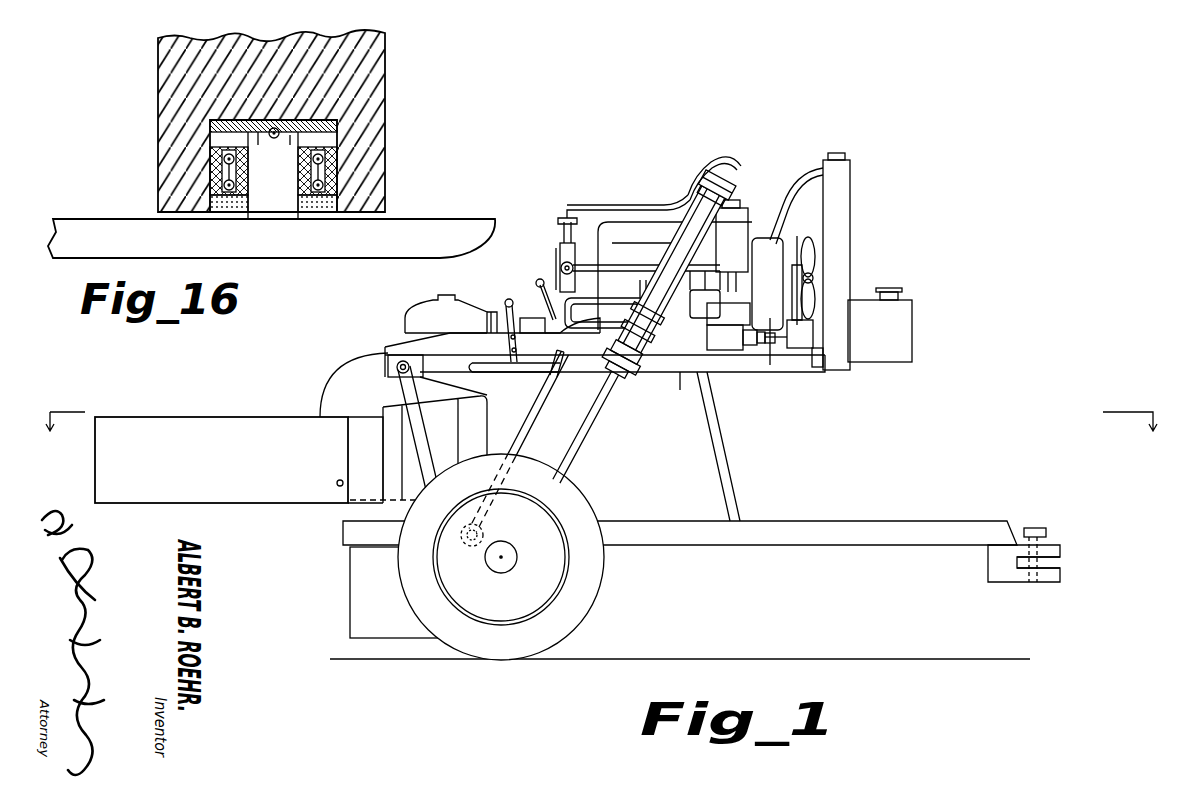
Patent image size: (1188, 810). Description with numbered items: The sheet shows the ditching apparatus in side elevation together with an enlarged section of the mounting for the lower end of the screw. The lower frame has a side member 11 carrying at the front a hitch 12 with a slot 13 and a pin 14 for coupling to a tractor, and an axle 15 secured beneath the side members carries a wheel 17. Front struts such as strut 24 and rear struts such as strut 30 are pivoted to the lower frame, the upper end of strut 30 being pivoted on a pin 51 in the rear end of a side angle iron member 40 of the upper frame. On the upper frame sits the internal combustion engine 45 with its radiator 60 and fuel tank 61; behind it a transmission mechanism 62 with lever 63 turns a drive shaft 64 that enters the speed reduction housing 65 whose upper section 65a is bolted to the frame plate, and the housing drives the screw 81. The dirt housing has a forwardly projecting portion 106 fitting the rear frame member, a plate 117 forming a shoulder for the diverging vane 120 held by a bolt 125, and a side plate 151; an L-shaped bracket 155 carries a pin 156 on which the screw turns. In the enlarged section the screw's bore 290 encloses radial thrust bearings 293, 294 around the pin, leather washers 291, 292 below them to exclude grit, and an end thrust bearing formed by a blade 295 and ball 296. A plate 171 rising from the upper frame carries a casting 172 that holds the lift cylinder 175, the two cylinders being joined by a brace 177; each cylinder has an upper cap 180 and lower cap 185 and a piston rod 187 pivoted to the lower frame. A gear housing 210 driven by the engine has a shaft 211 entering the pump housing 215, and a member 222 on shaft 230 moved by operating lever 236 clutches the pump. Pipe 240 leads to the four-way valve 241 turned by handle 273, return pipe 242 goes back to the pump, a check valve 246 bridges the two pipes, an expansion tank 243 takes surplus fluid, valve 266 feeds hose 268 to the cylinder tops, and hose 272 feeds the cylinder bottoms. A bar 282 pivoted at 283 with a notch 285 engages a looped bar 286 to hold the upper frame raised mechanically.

In FIG. 1, the side member 11 is at (700, 542).
In FIG. 1, the hitch 12 is at (1050, 602).
In FIG. 1, the slot 13 is at (1062, 563).
In FIG. 1, the pin 14 is at (1038, 528).
In FIG. 1, the axle 15 is at (598, 442).
In FIG. 1, the wheel 17 is at (590, 598).
In FIG. 1, the strut 24 is at (733, 474).
In FIG. 1, the strut 30 is at (423, 462).
In FIG. 1, the side angle iron member 40 is at (725, 378).
In FIG. 1, the internal combustion engine 45 is at (675, 276).
In FIG. 1, the pin 51 is at (393, 380).
In FIG. 1, the radiator 60 is at (850, 205).
In FIG. 1, the fuel tank 61 is at (905, 298).
In FIG. 1, the transmission mechanism 62 is at (563, 338).
In FIG. 1, the lever 63 is at (535, 297).
In FIG. 1, the drive shaft 64 is at (535, 310).
In FIG. 1, the speed reduction housing 65 is at (405, 317).
In FIG. 1, the upper section 65a is at (446, 325).
In FIG. 16, the screw 81 is at (385, 74).
In FIG. 1, the screw 81 is at (435, 448).
In FIG. 1, the forwardly projecting portion 106 is at (453, 386).
In FIG. 1, the plate 117 is at (386, 460).
In FIG. 1, the vane 120 is at (221, 460).
In FIG. 1, the bolt 125 is at (337, 486).
In FIG. 1, the side plate 151 is at (420, 592).
In FIG. 16, the L-shaped bracket 155 is at (271, 238).
In FIG. 16, the pin 156 is at (275, 214).
In FIG. 1, the plate 171 is at (605, 355).
In FIG. 1, the casting 172 is at (647, 327).
In FIG. 1, the cylinder 175 is at (690, 192).
In FIG. 1, the brace 177 is at (733, 196).
In FIG. 1, the cap 180 is at (736, 183).
In FIG. 1, the cap 185 is at (624, 380).
In FIG. 1, the rod 187 is at (565, 446).
In FIG. 1, the housing 210 is at (801, 292).
In FIG. 1, the shaft 211 is at (800, 358).
In FIG. 1, the pump housing 215 is at (747, 326).
In FIG. 1, the member 222 is at (772, 365).
In FIG. 1, the shaft 230 is at (740, 402).
In FIG. 1, the operating lever 236 is at (493, 325).
In FIG. 1, the pipe 240 is at (762, 296).
In FIG. 1, the 4-way valve 241 is at (560, 248).
In FIG. 1, the return pipe 242 is at (592, 328).
In FIG. 1, the expansion tank 243 is at (732, 246).
In FIG. 1, the check valve 246 is at (652, 280).
In FIG. 1, the valve 266 is at (560, 224).
In FIG. 1, the flexible pipe or hose 268 is at (722, 160).
In FIG. 1, the flexible pipe or hose 272 is at (621, 291).
In FIG. 1, the handle 273 is at (553, 270).
In FIG. 1, the bar 282 is at (540, 406).
In FIG. 1, the pivot 283 is at (463, 545).
In FIG. 1, the notch 285 is at (570, 363).
In FIG. 1, the looped bar 286 is at (475, 362).
In FIG. 16, the bore 290 is at (325, 135).
In FIG. 16, the washer 291 is at (330, 220).
In FIG. 16, the washer 292 is at (210, 200).
In FIG. 16, the radial thrust bearing 293 is at (330, 183).
In FIG. 16, the radial thrust bearing 294 is at (330, 152).
In FIG. 16, the blade 295 is at (258, 140).
In FIG. 16, the ball 296 is at (272, 158).